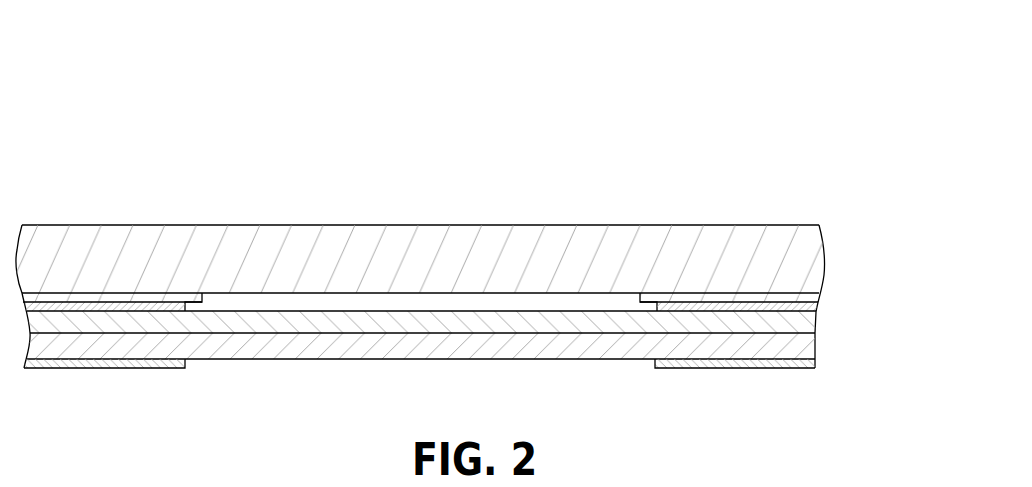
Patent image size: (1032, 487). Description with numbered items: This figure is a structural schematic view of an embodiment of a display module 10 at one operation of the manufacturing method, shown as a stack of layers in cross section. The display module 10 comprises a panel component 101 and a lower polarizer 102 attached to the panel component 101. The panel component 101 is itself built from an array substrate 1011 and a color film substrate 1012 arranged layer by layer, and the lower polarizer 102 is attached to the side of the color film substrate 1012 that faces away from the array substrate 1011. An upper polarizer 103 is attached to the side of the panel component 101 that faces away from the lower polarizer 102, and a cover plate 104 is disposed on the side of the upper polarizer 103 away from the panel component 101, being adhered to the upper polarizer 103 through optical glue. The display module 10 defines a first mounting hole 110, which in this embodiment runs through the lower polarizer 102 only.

The display module 10 is at (155, 147).
The cover plate 104 is at (500, 237).
The upper polarizer 103 is at (817, 308).
The panel component 101 is at (898, 323).
The color film substrate 1012 is at (815, 321).
The array substrate 1011 is at (813, 348).
The lower polarizer 102 is at (815, 364).
The first mounting hole 110 is at (311, 364).